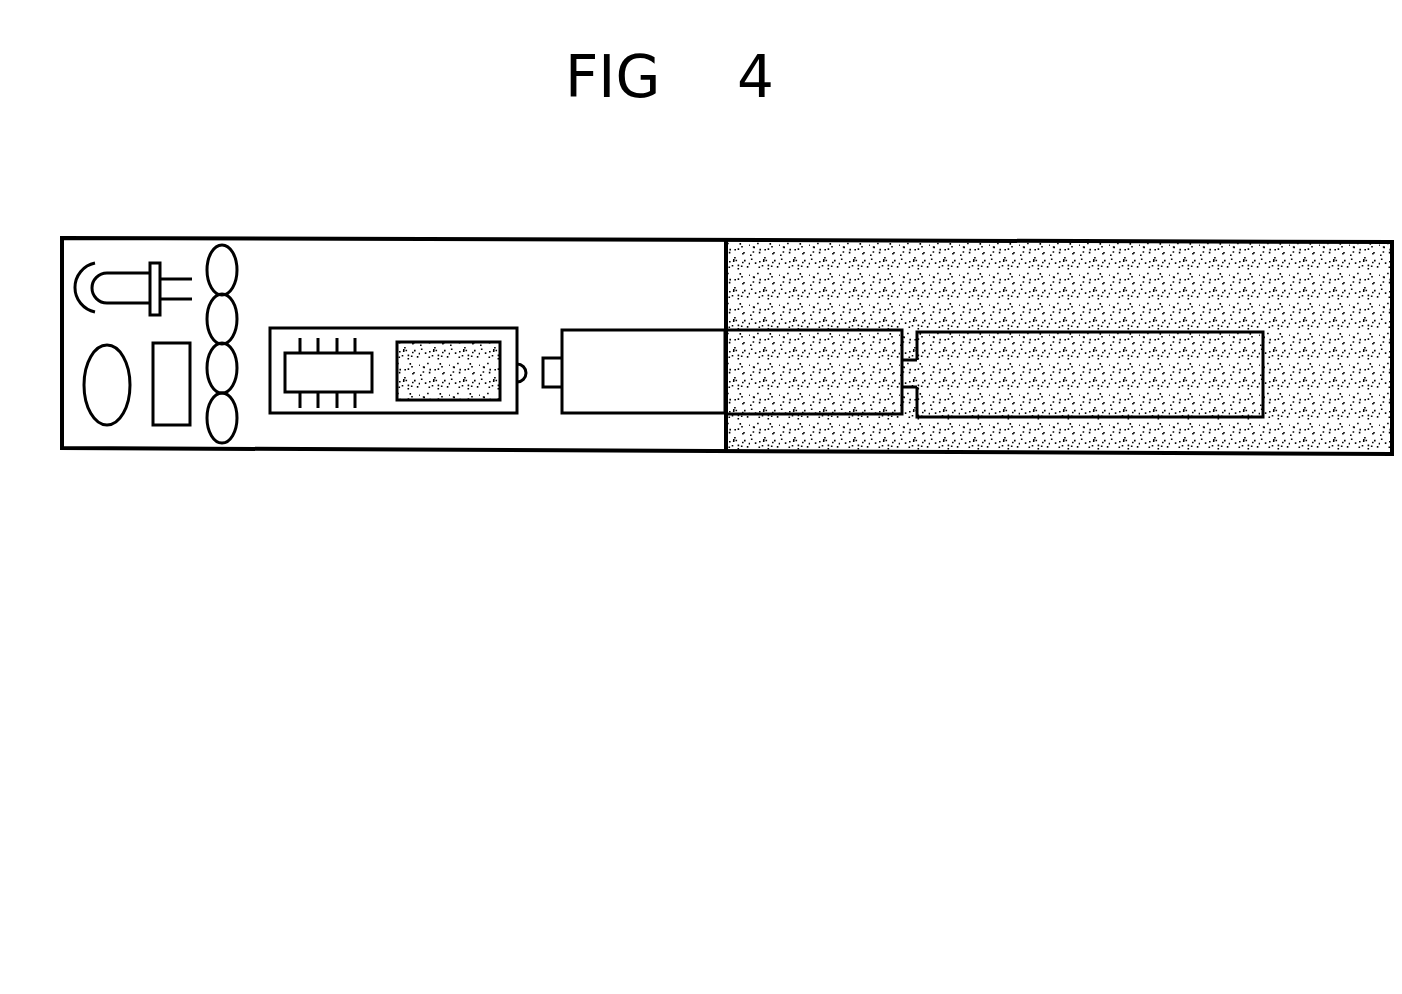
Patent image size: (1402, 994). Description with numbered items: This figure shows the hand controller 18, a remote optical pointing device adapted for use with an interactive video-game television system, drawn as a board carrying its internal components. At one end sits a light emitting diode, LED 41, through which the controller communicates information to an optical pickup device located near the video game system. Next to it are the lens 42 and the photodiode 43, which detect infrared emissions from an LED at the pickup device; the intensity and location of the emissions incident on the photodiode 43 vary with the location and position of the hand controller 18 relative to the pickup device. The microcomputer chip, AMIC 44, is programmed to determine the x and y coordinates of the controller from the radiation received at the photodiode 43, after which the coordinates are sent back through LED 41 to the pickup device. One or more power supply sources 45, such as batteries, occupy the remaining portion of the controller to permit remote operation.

The hand controller 18 is at (66, 452).
The light emitting diode 41 is at (113, 277).
The lens 42 is at (116, 410).
The photodiode 43 is at (173, 413).
The microcomputer chip 44 is at (345, 352).
The power supply source 45 is at (680, 343).